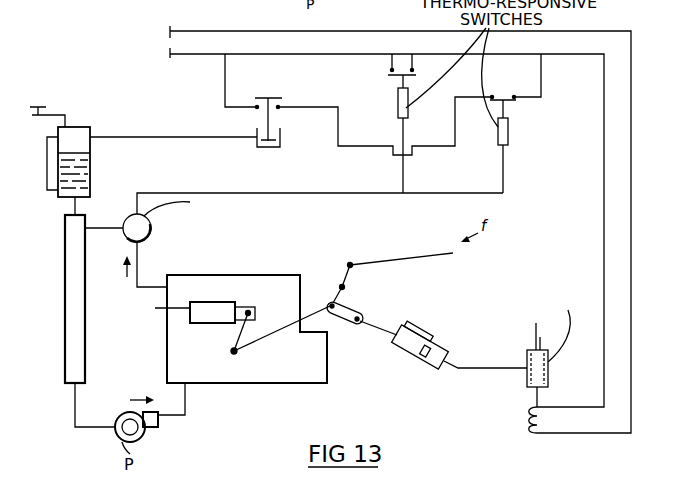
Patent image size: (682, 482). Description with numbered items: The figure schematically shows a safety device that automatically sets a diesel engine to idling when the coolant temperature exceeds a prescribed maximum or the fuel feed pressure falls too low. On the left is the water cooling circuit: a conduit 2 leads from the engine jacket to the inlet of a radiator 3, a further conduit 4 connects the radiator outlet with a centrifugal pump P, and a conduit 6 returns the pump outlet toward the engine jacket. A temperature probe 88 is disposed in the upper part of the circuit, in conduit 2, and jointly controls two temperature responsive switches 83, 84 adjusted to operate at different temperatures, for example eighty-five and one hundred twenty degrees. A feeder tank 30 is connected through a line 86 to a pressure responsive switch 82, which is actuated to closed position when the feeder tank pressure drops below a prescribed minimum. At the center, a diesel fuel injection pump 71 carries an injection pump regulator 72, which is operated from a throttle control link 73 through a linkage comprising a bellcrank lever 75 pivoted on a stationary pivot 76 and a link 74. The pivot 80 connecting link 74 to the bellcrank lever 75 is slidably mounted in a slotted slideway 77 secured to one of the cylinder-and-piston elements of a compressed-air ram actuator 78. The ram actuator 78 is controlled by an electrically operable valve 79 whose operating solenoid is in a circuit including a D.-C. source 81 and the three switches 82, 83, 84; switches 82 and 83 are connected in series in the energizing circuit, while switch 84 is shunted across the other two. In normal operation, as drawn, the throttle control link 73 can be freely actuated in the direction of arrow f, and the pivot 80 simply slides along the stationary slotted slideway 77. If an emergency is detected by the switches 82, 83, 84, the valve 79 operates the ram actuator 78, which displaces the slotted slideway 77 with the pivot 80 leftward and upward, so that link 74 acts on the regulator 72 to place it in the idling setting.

The conduit 2 is at (93, 232).
The radiator 3 is at (65, 288).
The further conduit 4 is at (78, 432).
The conduit 6 is at (178, 422).
The feeder tank 30 is at (84, 181).
The diesel fuel injection pump 71 is at (212, 318).
The injection pump regulator 72 is at (243, 300).
The throttle control link 73 is at (402, 255).
The link 74 is at (280, 328).
The bellcrank lever 75 is at (332, 303).
The stationary pivot 76 is at (345, 287).
The slotted slideway 77 is at (355, 324).
The compressed-air ram actuator 78 is at (408, 356).
The electrically operable valve 79 is at (530, 380).
The pivot 80 is at (350, 310).
The D.-C. source 81 is at (165, 41).
The pressure responsive switch 82 is at (258, 132).
The temperature responsive switch 83 is at (508, 135).
The temperature responsive switch 84 is at (408, 101).
The line 86 is at (118, 137).
The temperature probe 88 is at (150, 226).